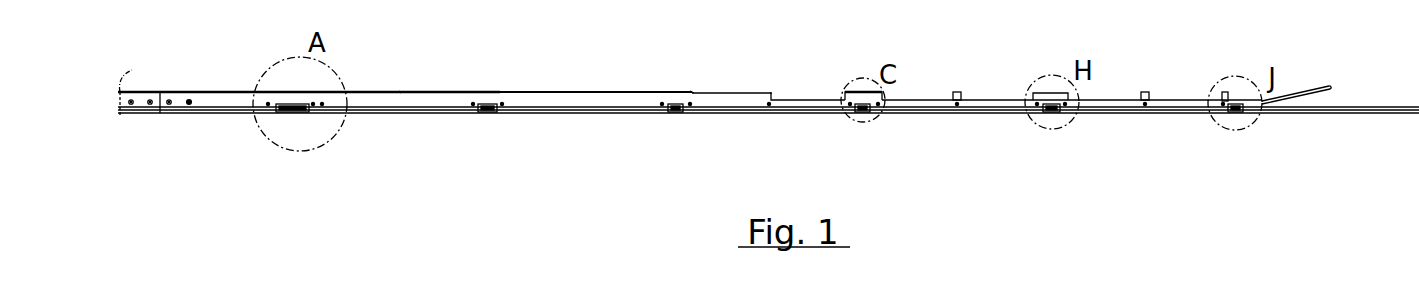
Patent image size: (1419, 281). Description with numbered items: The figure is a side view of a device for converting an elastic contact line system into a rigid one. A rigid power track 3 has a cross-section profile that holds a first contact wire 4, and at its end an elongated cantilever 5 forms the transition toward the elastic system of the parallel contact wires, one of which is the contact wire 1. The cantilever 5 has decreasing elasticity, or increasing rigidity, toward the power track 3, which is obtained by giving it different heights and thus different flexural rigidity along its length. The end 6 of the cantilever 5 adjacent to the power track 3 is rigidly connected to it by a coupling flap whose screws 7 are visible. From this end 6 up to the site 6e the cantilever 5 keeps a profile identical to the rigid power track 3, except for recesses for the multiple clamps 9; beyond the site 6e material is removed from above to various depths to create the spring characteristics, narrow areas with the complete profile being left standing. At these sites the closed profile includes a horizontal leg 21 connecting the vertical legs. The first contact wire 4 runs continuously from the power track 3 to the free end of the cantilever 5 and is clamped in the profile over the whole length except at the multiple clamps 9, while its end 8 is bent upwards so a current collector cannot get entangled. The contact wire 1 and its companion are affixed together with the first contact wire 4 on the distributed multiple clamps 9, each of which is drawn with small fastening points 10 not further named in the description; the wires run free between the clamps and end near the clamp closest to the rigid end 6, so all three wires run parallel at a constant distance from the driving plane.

The contact wire 1 is at (1395, 113).
The power track 3 is at (143, 98).
The first contact wire 4 is at (134, 114).
The cantilever 5 is at (578, 100).
The end of the cantilever 6 is at (161, 93).
The site 6e is at (692, 93).
The screws 7 is at (188, 103).
The end of the contact wire 8 is at (1337, 88).
The multiple clamps 9 is at (290, 104).
The fastening rivet 10 is at (270, 109).
The horizontal leg 21 is at (400, 93).